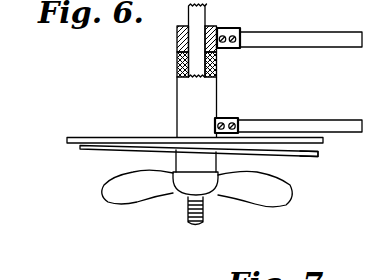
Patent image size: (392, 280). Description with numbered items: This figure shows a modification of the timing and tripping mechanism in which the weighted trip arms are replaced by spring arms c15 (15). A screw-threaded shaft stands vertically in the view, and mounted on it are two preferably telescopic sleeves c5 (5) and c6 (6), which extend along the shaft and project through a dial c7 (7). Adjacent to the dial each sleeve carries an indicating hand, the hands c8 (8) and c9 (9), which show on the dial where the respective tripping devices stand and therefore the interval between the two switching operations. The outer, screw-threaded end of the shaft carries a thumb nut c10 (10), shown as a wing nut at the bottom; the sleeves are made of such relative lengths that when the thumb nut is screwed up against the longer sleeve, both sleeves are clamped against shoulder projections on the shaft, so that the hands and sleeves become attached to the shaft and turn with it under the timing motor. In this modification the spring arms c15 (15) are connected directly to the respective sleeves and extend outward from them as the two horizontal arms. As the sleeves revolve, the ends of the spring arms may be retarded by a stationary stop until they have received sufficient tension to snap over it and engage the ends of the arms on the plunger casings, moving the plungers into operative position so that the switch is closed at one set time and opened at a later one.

The sleeve c5 is at (227, 63).
The sleeve 5 is at (216, 65).
The sleeve c6 is at (177, 49).
The sleeve 6 is at (177, 60).
The dial c7 is at (194, 113).
The dial 7 is at (74, 136).
The indicating hand c8 is at (189, 171).
The indicating hand 8 is at (82, 150).
The indicating hand c9 is at (323, 180).
The indicating hand 9 is at (312, 158).
The thumb nut c10 is at (197, 212).
The thumb nut 10 is at (141, 191).
The spring arms c15 is at (294, 66).
The spring arms 15 is at (318, 128).